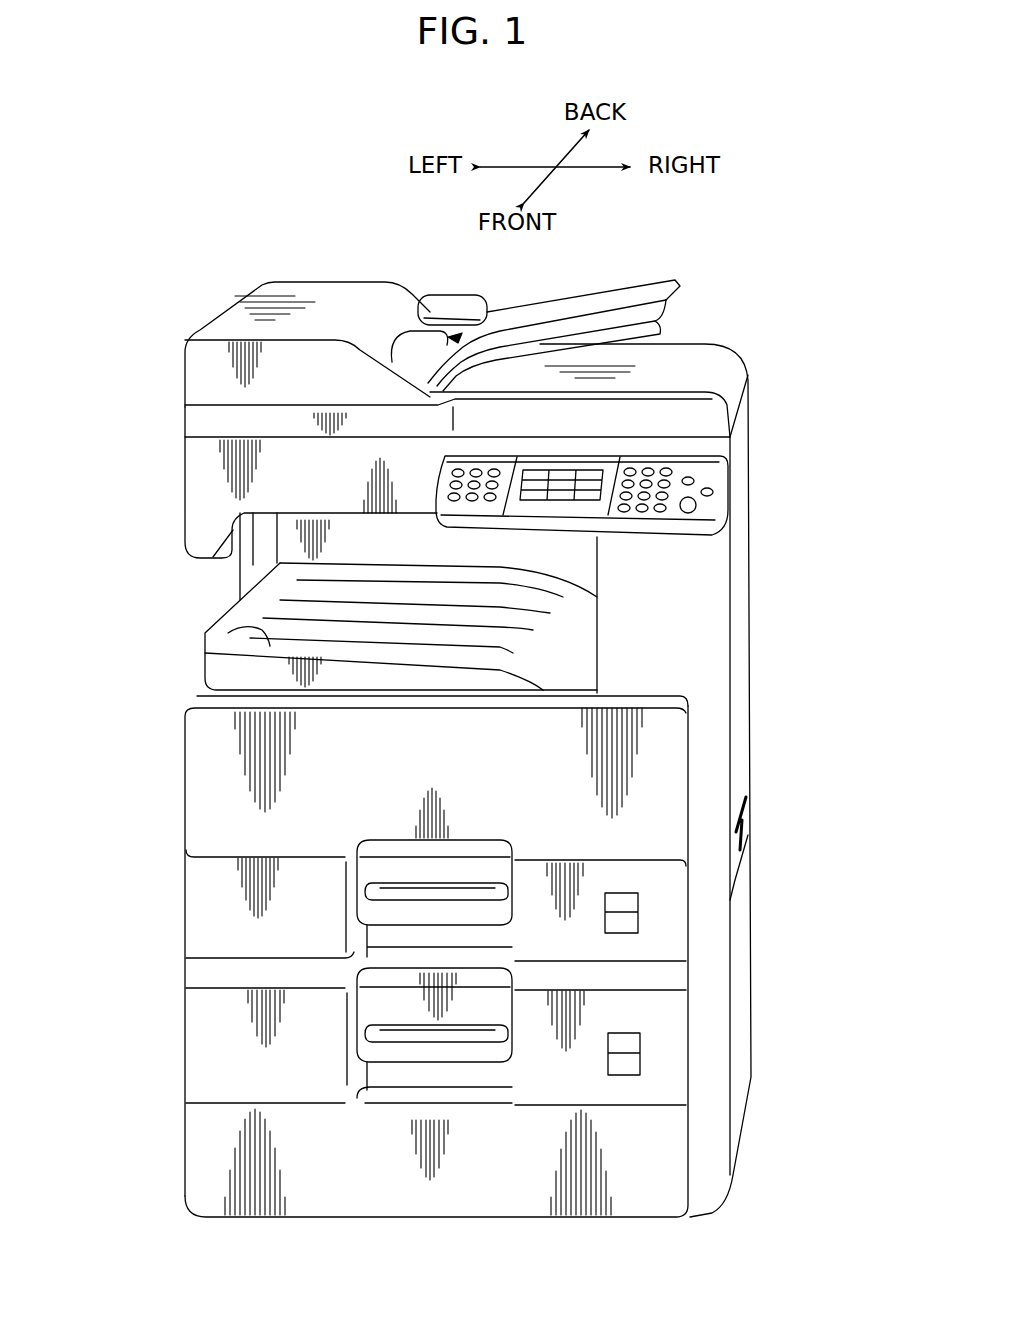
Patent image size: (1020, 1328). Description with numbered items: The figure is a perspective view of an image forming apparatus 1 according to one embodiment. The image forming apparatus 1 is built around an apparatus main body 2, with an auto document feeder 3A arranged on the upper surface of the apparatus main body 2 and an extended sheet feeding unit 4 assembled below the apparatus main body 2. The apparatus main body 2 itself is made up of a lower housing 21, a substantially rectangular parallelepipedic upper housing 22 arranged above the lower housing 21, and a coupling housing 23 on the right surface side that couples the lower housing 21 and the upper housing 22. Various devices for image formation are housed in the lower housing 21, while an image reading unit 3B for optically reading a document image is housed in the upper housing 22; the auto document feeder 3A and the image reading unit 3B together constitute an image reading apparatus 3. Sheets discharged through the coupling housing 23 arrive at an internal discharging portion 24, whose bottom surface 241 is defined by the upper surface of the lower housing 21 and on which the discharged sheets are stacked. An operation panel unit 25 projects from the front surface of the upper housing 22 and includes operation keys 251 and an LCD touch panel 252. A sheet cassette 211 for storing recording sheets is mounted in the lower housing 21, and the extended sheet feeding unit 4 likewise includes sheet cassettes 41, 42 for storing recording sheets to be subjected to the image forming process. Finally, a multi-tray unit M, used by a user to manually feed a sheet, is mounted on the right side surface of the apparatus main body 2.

The image forming apparatus 1 is at (167, 227).
The apparatus main body 2 is at (870, 400).
The image reading apparatus 3 is at (75, 350).
The auto document feeder 3A is at (184, 369).
The image reading unit 3B is at (184, 451).
The lower housing 21 is at (700, 823).
The upper housing 22 is at (740, 427).
The coupling housing 23 is at (703, 613).
The internal discharging portion 24 is at (203, 593).
The operation panel unit 25 is at (707, 523).
The sheet cassette 41 is at (208, 1050).
The sheet cassette 42 is at (208, 1161).
The sheet cassette 211 is at (205, 907).
The bottom surface 241 is at (263, 646).
The operation keys 251 is at (640, 504).
The LCD touch panel 252 is at (553, 495).
The multi-tray unit M is at (754, 808).
The extended sheet feeding unit 4 is at (723, 1043).